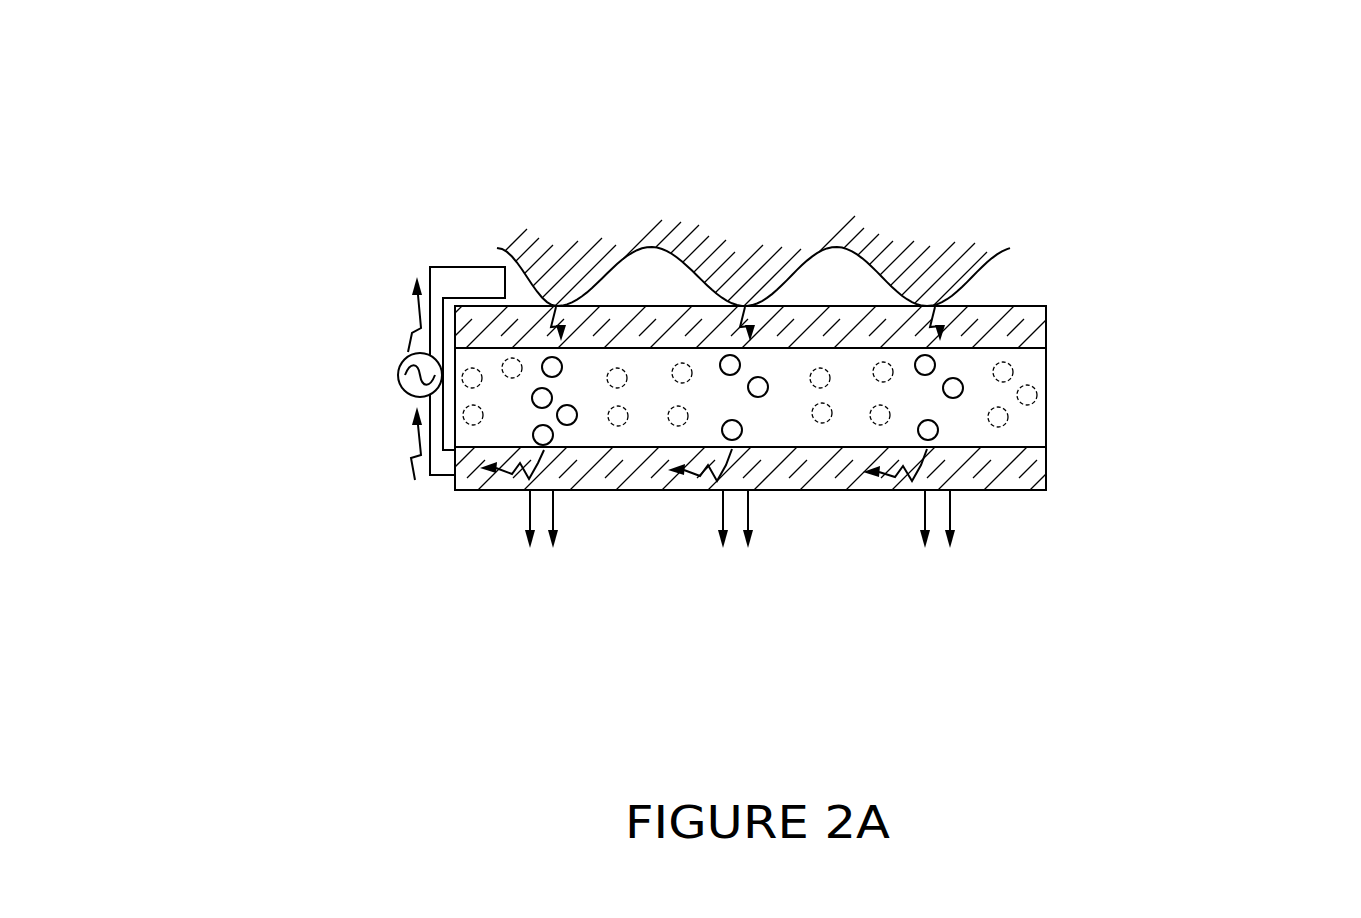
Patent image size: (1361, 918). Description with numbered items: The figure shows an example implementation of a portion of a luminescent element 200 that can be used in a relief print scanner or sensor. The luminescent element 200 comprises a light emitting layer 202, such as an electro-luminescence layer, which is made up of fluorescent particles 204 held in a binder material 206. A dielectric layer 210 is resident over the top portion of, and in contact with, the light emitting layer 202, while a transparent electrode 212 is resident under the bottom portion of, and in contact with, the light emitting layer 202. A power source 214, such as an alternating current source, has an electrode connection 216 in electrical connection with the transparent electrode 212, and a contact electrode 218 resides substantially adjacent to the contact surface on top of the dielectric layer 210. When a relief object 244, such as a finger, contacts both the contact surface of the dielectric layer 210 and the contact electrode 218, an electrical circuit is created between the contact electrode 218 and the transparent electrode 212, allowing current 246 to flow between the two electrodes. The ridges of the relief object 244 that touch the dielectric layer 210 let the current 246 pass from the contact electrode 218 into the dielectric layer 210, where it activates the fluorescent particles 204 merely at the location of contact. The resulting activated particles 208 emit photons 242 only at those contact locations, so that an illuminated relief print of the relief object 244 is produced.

The luminescent element 200 is at (154, 87).
The light emitting layer 202 is at (894, 398).
The fluorescent particles 204 is at (1038, 392).
The binder material 206 is at (1035, 427).
The activated particles 208 is at (963, 390).
The dielectric layer 210 is at (1040, 323).
The transparent electrode 212 is at (1044, 476).
The power source 214 is at (404, 390).
The electrode connection 216 is at (430, 476).
The contact electrode 218 is at (452, 272).
The photons 242 is at (892, 565).
The relief object 244 is at (1011, 265).
The electrical current 246 is at (412, 333).